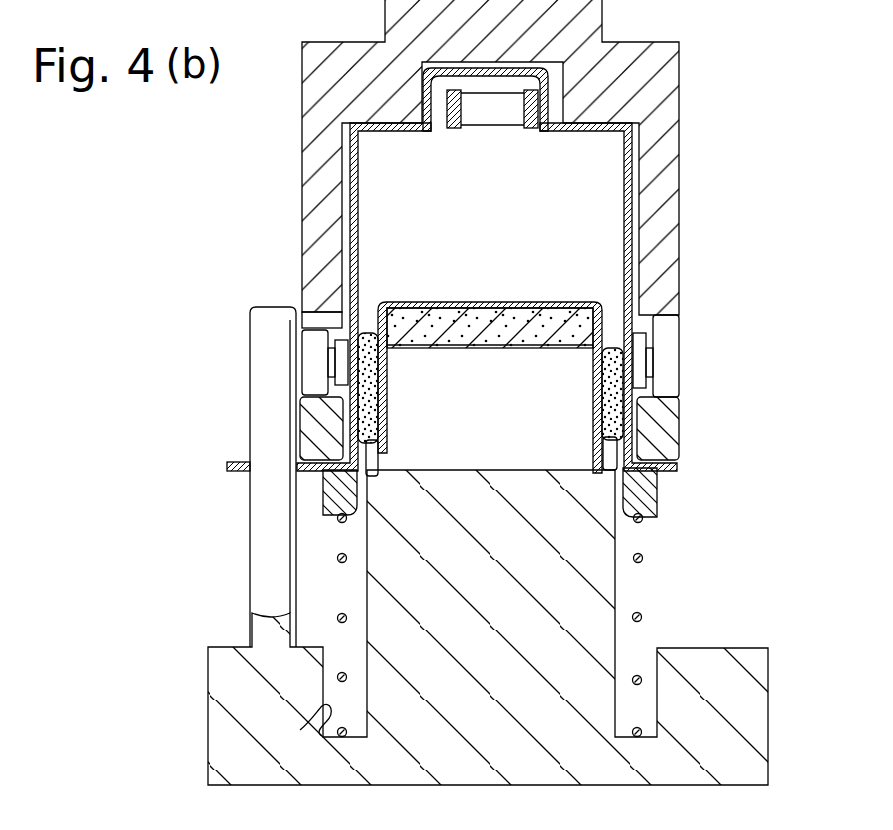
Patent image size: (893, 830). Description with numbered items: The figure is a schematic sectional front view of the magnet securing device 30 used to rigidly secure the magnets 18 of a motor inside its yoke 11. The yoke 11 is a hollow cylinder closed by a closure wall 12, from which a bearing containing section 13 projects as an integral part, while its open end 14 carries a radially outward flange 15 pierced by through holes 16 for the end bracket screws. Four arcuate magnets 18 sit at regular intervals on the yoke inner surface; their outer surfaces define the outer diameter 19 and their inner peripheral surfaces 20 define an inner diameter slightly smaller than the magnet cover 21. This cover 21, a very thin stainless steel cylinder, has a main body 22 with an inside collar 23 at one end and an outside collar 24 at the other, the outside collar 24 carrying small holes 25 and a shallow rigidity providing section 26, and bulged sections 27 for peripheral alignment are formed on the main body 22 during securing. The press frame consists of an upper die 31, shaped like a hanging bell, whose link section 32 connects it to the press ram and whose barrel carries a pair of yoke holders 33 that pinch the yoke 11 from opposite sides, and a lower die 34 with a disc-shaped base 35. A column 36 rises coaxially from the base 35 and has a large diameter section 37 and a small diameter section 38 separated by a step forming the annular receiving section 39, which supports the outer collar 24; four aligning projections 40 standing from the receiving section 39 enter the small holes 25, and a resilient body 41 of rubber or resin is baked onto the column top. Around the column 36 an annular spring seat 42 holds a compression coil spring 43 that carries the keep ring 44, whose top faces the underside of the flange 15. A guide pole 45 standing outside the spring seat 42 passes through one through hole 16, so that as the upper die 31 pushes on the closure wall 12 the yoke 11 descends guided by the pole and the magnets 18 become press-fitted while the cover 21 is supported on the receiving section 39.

The yoke 11 is at (642, 210).
The closure wall 12 is at (640, 122).
The bearing containing section 13 is at (563, 100).
The open end 14 is at (366, 484).
The flange 15 is at (227, 473).
The through holes 16 is at (262, 453).
The magnets 18 is at (369, 326).
The outer diameter 19 is at (593, 375).
The inner peripheral surfaces 20 is at (595, 453).
The magnet cover 21 is at (505, 296).
The main body 22 is at (401, 397).
The inside collar 23 is at (592, 302).
The outside collar 24 is at (496, 489).
The small holes 25 is at (368, 472).
The rigidity providing section 26 is at (625, 492).
The bulged sections 27 is at (386, 3).
The magnet securing device 30 is at (236, 196).
The upper die 31 is at (690, 156).
The link section 32 is at (602, 13).
The yoke holders 33 is at (312, 343).
The lower die 34 is at (211, 634).
The base 35 is at (752, 648).
The column 36 is at (626, 597).
The large diameter section 37 is at (617, 543).
The small diameter section 38 is at (437, 355).
The receiving section 39 is at (597, 462).
The aligning projections 40 is at (677, 397).
The resilient body 41 is at (560, 322).
The spring seat 42 is at (305, 725).
The spring 43 is at (642, 617).
The keep ring 44 is at (657, 500).
The guide pole 45 is at (262, 422).